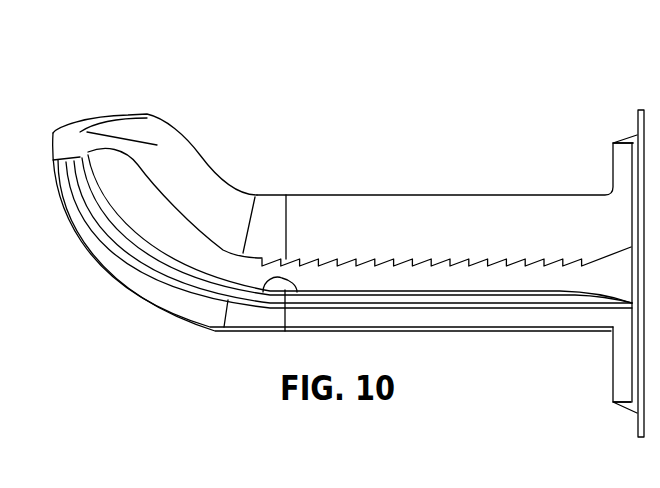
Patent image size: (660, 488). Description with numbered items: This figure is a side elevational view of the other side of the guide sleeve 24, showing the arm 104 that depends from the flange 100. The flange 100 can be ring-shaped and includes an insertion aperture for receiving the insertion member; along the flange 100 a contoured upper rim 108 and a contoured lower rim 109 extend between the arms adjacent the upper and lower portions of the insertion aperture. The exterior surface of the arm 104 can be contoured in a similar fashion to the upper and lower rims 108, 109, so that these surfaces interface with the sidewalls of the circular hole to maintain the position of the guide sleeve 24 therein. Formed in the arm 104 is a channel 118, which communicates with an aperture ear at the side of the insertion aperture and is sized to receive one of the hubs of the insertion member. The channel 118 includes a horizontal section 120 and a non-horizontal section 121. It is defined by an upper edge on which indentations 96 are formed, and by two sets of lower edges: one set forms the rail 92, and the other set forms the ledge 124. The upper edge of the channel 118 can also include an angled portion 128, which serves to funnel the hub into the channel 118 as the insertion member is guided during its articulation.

The guide sleeve 24 is at (378, 156).
The rail 92 is at (263, 292).
The indentations 96 is at (522, 262).
The flange 100 is at (640, 107).
The arm 104 is at (210, 210).
The contoured upper rim 108 is at (623, 162).
The contoured lower rim 109 is at (620, 370).
The channel 118 is at (210, 283).
The horizontal section 120 is at (452, 280).
The non-horizontal section 121 is at (152, 257).
The ledge 124 is at (474, 303).
The angled portion 128 is at (613, 253).